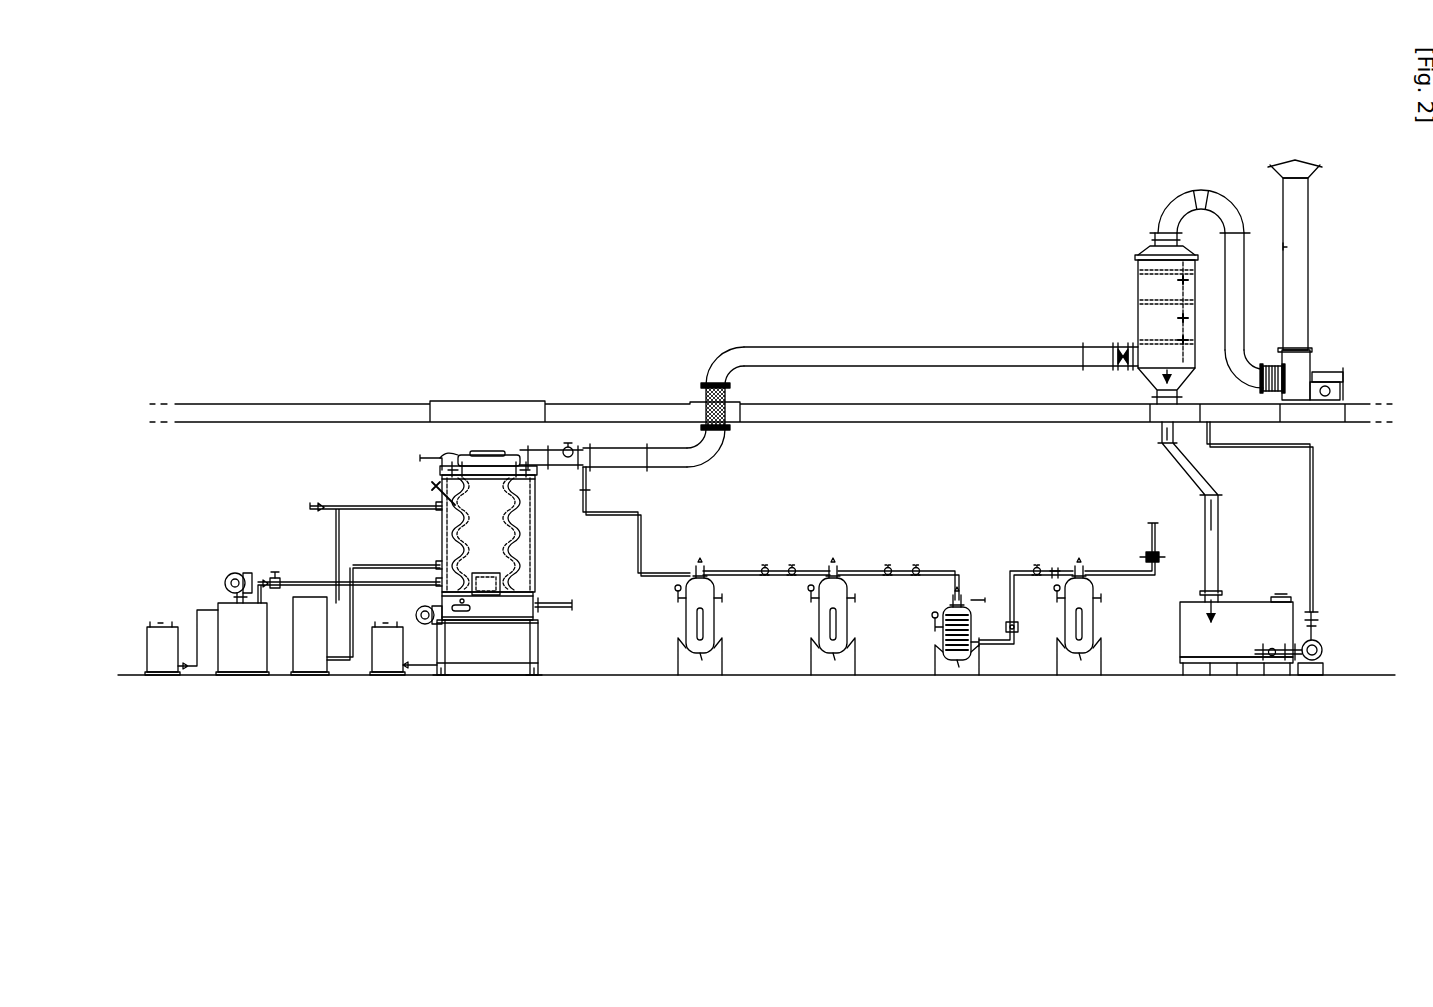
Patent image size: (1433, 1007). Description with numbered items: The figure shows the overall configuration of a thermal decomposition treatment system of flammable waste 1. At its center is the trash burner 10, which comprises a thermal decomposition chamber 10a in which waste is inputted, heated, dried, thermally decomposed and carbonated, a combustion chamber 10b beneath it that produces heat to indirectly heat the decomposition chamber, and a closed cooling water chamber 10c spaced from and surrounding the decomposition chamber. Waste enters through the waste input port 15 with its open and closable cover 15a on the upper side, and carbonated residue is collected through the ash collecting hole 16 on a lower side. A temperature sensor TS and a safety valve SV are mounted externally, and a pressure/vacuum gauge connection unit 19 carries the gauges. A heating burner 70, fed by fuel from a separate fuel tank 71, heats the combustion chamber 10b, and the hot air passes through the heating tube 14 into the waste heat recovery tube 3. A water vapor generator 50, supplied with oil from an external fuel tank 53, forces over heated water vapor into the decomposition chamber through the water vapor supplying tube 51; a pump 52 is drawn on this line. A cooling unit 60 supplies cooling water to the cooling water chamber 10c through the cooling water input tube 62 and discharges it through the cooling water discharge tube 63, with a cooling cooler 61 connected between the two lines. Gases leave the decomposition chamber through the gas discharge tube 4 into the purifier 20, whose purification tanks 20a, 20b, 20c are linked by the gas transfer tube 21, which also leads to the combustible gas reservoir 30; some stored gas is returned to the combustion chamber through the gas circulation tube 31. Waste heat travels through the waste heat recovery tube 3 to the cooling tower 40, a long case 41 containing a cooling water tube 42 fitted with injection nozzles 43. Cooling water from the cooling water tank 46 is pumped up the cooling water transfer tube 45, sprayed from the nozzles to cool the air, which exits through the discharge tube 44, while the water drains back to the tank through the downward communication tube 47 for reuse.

The thermal decomposition treatment system of flammable waste 1 is at (483, 132).
The waste heat recovery tube 3 is at (668, 455).
The gas discharge tube 4 is at (550, 450).
The trash burner 10 is at (481, 538).
The thermal decomposition chamber 10a is at (530, 550).
The combustion chamber 10b is at (467, 612).
The cooling water chamber 10c is at (532, 575).
The heating tube 14 is at (462, 528).
The waste input port 15 is at (487, 452).
The cover 15a is at (480, 450).
The ash collecting hole 16 is at (485, 597).
The pressure/vacuum gauge connection unit 19 is at (442, 470).
The safety valve SV is at (456, 456).
The temperature sensor TS is at (432, 488).
The purifier 20 is at (805, 580).
The purification tank 20a is at (688, 612).
The purification tank 20b is at (818, 620).
The purification tank 20c is at (942, 625).
The gas transfer tube 21 is at (740, 571).
The combustible gas reservoir 30 is at (1100, 605).
The gas circulation tube 31 is at (555, 607).
The cooling tower 40 is at (1150, 300).
The case 41 is at (1188, 298).
The cooling water tube 42 is at (1183, 318).
The injection nozzles 43 is at (1183, 290).
The discharge tube 44 is at (1225, 213).
The cooling water transfer tube 45 is at (1313, 490).
The cooling water tank 46 is at (1248, 600).
The communication tube 47 is at (1208, 470).
The water vapor generator 50 is at (243, 680).
The water vapor supplying tube 51 is at (290, 582).
The catalyst pump 52 is at (226, 584).
The fuel tank 53 is at (135, 653).
The cooling unit 60 is at (325, 590).
The cooling cooler 61 is at (310, 680).
The cooling water input tube 62 is at (350, 505).
The cooling water discharge tube 63 is at (372, 565).
The heating burner 70 is at (418, 612).
The fuel tank 71 is at (390, 680).